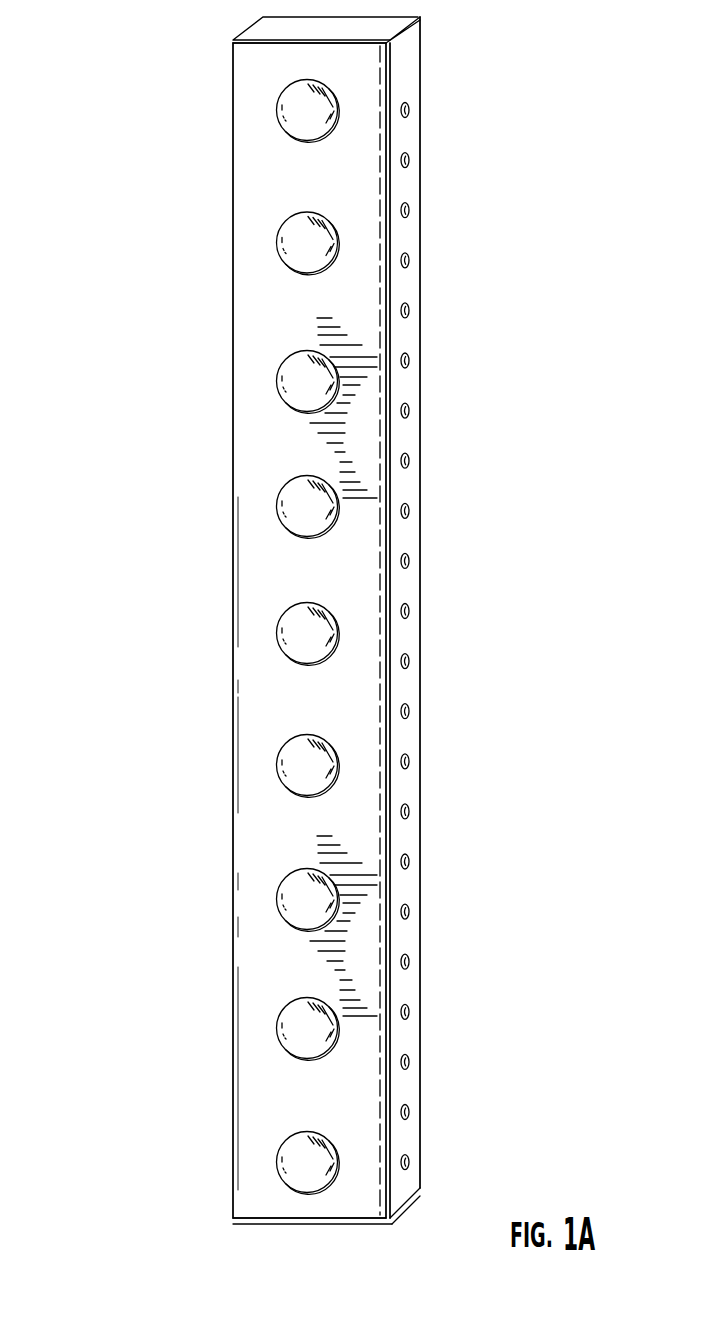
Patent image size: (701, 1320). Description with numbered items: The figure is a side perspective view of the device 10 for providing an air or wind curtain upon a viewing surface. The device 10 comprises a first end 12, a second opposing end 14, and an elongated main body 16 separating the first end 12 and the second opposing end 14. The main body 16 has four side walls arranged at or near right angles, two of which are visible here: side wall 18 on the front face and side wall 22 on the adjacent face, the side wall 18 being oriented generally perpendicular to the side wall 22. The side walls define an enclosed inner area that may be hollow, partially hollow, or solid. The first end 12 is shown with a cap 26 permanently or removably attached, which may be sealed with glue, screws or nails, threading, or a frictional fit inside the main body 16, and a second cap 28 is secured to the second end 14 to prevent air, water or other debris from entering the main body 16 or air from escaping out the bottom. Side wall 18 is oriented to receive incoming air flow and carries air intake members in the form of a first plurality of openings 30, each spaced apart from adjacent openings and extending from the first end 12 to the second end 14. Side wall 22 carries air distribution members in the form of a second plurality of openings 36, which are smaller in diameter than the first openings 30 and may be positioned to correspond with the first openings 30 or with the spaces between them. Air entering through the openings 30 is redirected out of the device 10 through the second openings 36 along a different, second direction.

The device 10 is at (116, 386).
The first end 12 is at (263, 33).
The second opposing end 14 is at (245, 1215).
The main body 16 is at (258, 647).
The side wall 18 is at (270, 307).
The side wall 22 is at (408, 142).
The cap 26 is at (402, 37).
The second cap 28 is at (365, 1224).
The first plurality of openings 30 is at (283, 122).
The second plurality of openings 36 is at (408, 405).